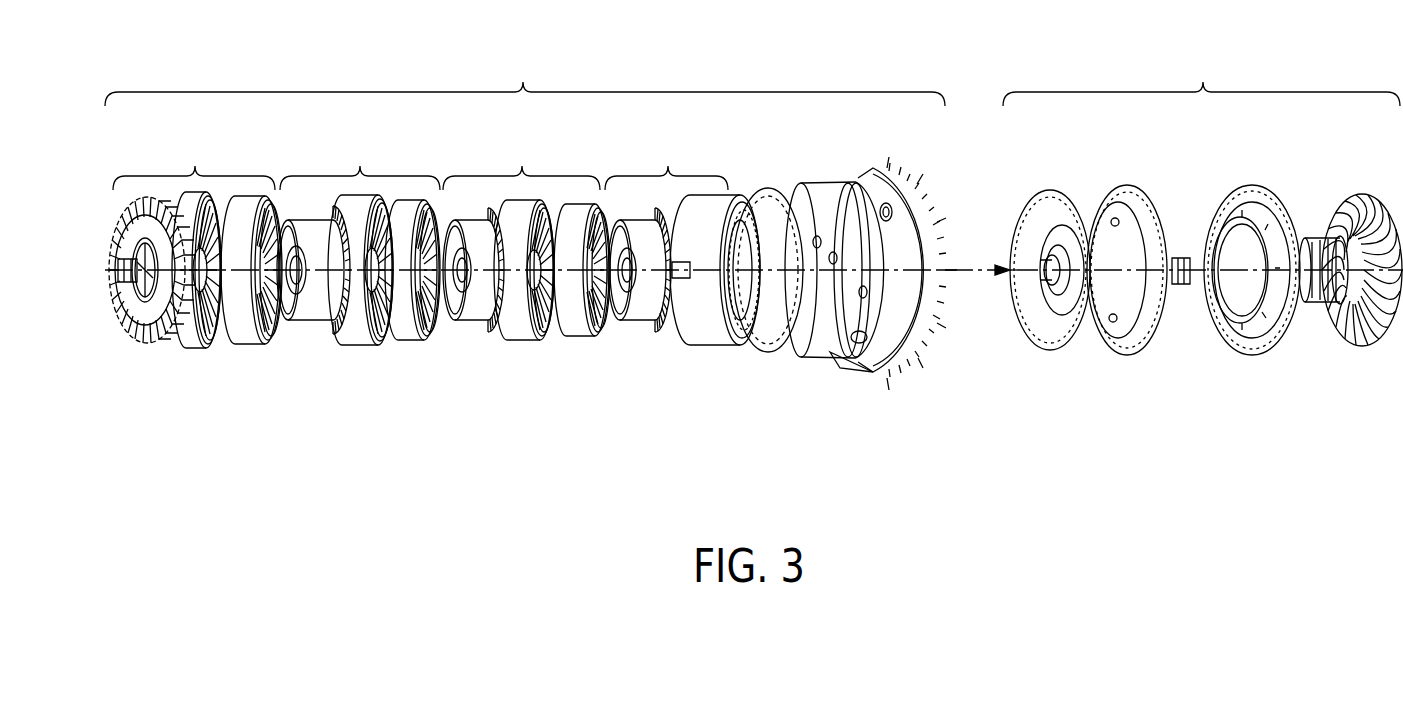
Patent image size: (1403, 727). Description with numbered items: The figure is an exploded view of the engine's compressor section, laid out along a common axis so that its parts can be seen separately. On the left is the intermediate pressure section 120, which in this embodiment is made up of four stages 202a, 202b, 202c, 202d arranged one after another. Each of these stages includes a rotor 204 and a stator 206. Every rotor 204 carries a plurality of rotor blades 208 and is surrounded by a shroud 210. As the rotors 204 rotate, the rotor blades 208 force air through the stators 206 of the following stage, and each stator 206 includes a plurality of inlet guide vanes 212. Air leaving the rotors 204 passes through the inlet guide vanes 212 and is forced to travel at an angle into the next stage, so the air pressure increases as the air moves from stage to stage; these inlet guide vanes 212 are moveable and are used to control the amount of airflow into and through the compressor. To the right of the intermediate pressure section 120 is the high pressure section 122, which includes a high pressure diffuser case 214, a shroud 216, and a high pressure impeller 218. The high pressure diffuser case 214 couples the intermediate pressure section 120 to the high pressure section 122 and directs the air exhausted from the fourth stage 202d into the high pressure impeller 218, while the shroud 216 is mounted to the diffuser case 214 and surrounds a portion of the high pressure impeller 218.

The intermediate pressure section 120 is at (525, 75).
The high pressure section 122 is at (1201, 75).
The first intermediate pressure section stage 202a is at (194, 159).
The second intermediate pressure section stage 202b is at (360, 159).
The third intermediate pressure section stage 202c is at (521, 159).
The fourth intermediate compressor stage 202d is at (666, 159).
The rotor 204 is at (122, 322).
The stator 206 is at (262, 352).
The rotor blades 208 is at (148, 344).
The shroud 210 is at (192, 350).
The inlet guide vanes 212 is at (222, 346).
The high pressure diffuser case 214 is at (1082, 205).
The shroud 216 is at (1240, 187).
The high pressure impeller 218 is at (1350, 197).